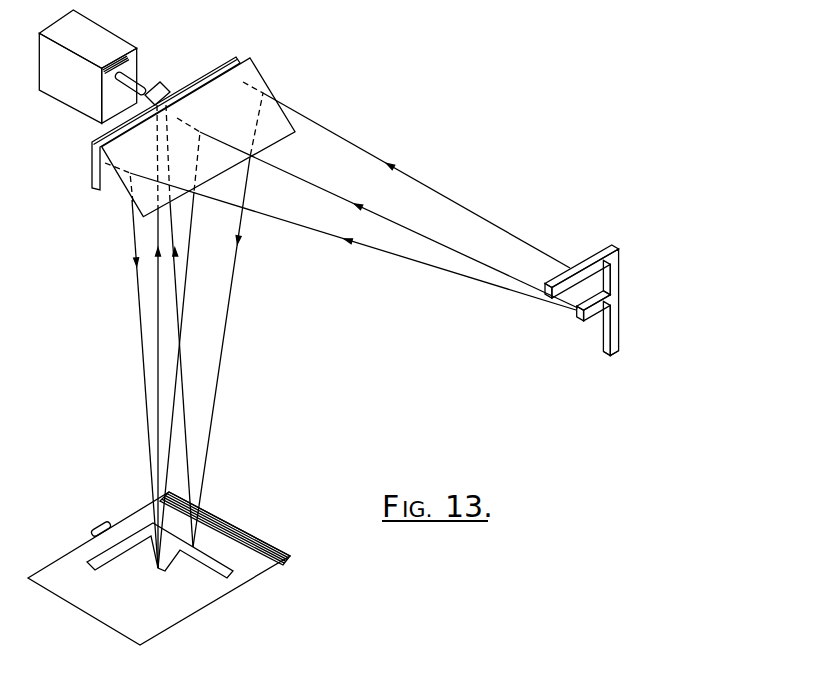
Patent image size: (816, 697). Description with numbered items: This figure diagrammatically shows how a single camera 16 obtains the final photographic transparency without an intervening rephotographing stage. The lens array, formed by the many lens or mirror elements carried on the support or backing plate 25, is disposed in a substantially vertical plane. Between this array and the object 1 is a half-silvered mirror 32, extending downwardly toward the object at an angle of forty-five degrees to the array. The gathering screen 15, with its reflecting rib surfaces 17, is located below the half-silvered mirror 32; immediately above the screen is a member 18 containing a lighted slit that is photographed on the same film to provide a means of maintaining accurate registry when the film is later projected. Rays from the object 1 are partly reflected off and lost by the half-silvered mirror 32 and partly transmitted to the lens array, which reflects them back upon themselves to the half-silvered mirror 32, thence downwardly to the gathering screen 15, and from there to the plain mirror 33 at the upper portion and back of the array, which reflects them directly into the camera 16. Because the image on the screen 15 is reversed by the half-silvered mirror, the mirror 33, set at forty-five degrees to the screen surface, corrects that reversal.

The object 1 is at (619, 285).
The gathering screen 15 is at (178, 615).
The camera 16 is at (71, 95).
The reflecting rib surfaces 17 is at (258, 539).
The member with lighted slit 18 is at (94, 531).
The support or backing plate 25 is at (92, 163).
The half-silvered mirror 32 is at (276, 133).
The plain mirror 33 is at (166, 87).